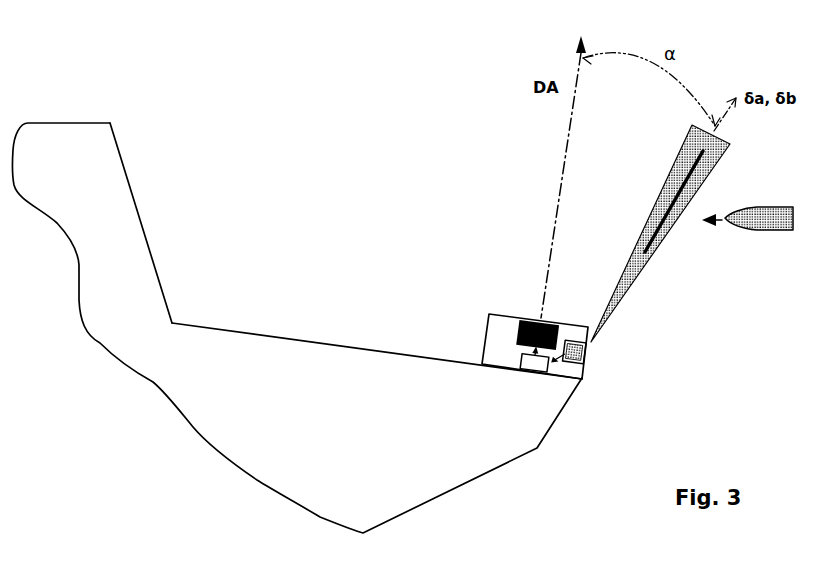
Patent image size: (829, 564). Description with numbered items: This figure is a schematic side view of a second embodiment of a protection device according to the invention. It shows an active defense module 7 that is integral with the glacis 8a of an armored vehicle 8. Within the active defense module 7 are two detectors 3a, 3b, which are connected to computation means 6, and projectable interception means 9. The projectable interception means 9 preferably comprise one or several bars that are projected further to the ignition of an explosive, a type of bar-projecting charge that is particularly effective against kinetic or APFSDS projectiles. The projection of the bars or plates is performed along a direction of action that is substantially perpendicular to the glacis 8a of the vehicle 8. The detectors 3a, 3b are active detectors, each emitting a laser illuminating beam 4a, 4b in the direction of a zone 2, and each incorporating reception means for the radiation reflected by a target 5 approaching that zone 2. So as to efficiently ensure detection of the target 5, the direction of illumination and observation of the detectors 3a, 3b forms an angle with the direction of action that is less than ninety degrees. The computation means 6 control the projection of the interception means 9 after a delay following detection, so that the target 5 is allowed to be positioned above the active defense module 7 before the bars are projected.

The zone 2 is at (669, 230).
The detector 3a is at (637, 373).
The detector 3b is at (588, 355).
The laser illuminating beam 4a is at (609, 233).
The laser illuminating beam 4b is at (678, 173).
The target 5 is at (770, 232).
The computation means 6 is at (540, 373).
The active defense module 7 is at (437, 278).
The armored vehicle 8 is at (388, 472).
The glacis 8a is at (307, 343).
The projectable interception means 9 is at (533, 318).